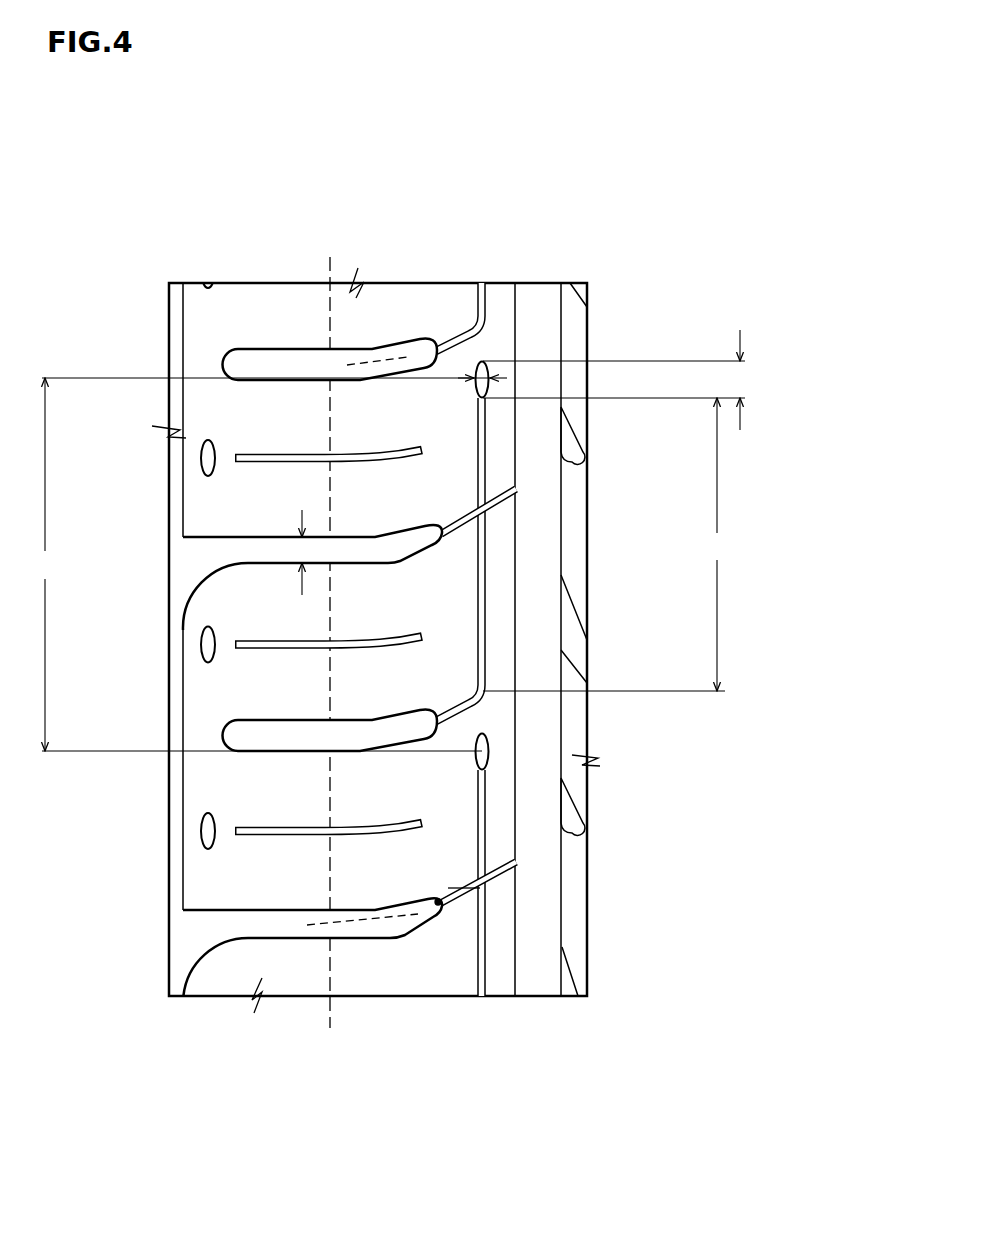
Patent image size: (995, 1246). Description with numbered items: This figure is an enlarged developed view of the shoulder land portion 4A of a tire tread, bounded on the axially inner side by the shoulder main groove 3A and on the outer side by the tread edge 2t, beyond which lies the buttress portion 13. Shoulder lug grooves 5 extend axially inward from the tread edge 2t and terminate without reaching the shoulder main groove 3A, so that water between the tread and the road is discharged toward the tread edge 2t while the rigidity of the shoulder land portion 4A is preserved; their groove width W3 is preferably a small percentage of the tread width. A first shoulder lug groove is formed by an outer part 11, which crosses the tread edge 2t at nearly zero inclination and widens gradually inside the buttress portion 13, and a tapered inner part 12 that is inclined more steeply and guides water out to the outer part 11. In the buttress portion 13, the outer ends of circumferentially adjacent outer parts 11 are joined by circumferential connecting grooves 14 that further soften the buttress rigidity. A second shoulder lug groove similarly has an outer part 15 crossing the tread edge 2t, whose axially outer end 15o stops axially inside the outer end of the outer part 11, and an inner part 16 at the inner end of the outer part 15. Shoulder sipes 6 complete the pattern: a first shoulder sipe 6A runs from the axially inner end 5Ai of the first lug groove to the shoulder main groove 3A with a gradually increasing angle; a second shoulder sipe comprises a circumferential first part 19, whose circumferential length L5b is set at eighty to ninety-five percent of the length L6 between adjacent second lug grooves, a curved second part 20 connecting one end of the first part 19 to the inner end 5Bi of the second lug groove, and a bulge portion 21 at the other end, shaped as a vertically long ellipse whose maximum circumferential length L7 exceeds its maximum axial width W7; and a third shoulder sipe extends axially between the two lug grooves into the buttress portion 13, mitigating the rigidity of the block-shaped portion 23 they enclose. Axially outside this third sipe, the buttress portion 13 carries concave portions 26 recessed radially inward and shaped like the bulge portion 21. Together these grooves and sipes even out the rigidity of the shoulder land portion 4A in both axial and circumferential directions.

The shoulder main groove 3A is at (542, 315).
The shoulder land portion 4A is at (420, 303).
The shoulder lug grooves 5 is at (268, 200).
The shoulder sipes 6 is at (558, 200).
The outer part 11 is at (250, 534).
The inner part 12 is at (395, 567).
The buttress portion 13 is at (243, 310).
The connecting grooves 14 is at (172, 310).
The outer part 15 is at (290, 348).
The axially outer end 15o is at (222, 366).
The inner part 16 is at (398, 343).
The first part 19 is at (483, 302).
The second part 20 is at (458, 342).
The bulge portion 21 is at (490, 370).
The block-shaped portion 23 is at (355, 804).
The concave portions 26 is at (201, 830).
The tread edge 2t is at (328, 629).
The axially inner end 5Ai is at (452, 907).
The inner end 5Bi is at (489, 752).
The first shoulder sipe 6A is at (489, 517).
The groove width W3 is at (183, 541).
The maximum width W7 is at (470, 392).
The circumferential length L6 is at (262, 564).
The maximum length L7 is at (617, 380).
The circumferential length L5b is at (610, 544).